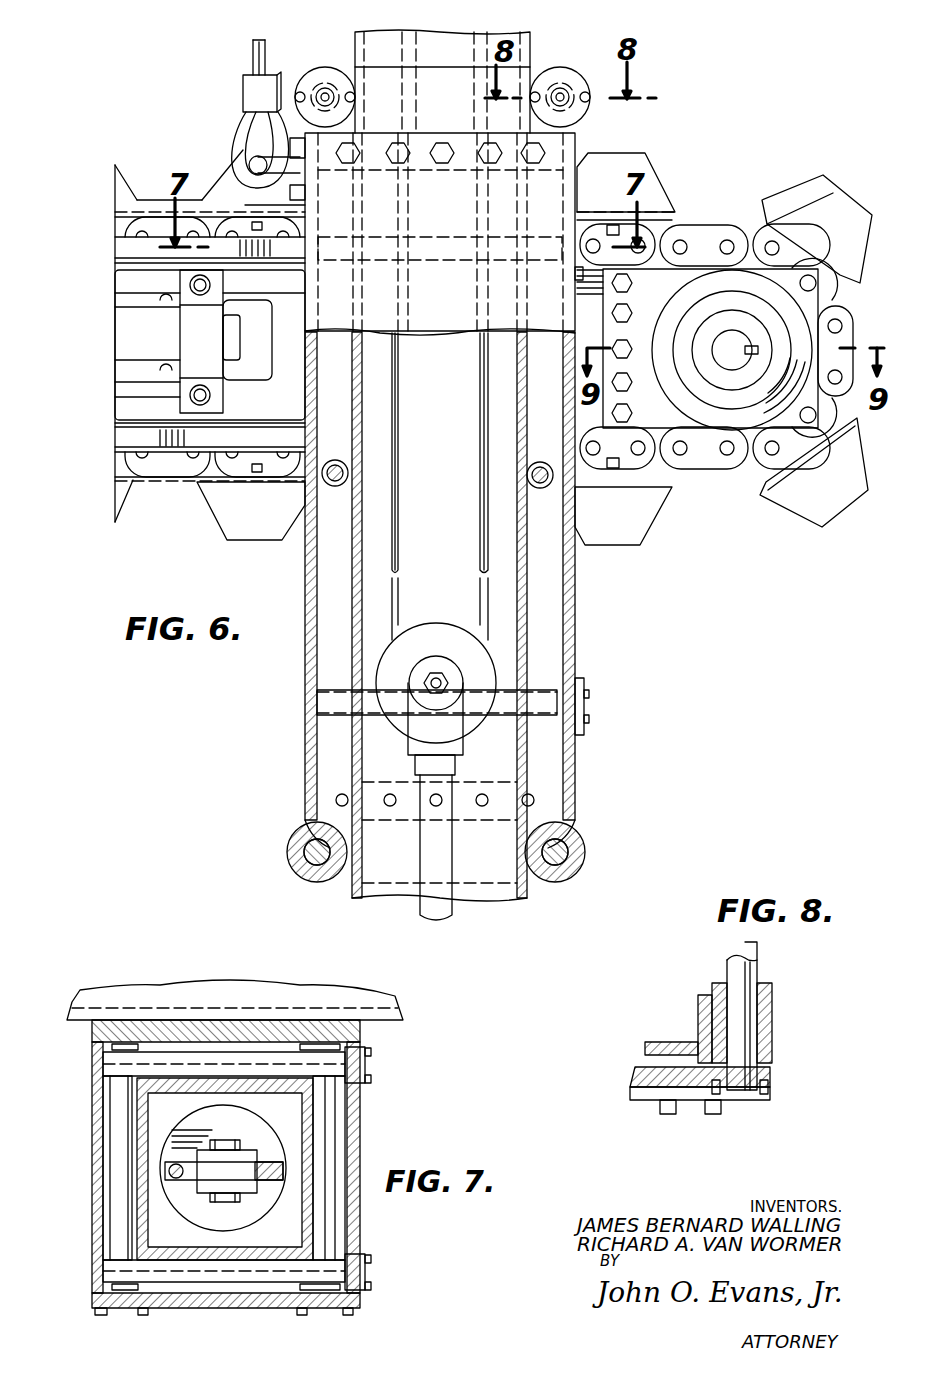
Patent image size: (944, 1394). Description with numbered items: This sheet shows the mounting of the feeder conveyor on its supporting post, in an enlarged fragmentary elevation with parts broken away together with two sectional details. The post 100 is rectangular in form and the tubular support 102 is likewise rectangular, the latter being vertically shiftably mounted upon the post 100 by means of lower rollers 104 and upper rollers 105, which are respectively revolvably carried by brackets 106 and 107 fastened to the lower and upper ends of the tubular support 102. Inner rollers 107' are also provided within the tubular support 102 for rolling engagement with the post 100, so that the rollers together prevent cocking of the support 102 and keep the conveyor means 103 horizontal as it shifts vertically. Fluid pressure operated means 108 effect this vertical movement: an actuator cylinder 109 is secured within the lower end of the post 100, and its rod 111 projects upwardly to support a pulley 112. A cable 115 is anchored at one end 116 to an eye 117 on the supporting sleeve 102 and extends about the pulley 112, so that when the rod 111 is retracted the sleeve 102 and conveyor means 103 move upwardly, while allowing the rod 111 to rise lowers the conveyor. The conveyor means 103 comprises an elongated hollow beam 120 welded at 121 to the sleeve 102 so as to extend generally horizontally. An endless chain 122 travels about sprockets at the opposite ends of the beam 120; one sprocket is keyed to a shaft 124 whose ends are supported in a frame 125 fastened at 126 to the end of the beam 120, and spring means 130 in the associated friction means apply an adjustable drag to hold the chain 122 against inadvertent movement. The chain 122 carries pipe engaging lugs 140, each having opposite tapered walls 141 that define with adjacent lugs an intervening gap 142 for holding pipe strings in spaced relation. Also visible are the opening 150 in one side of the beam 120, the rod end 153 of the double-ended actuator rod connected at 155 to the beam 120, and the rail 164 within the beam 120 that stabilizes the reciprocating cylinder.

In FIG. 6, the post 100 is at (516, 890).
In FIG. 7, the post 100 is at (310, 1222).
In FIG. 8, the post 100 is at (706, 1008).
In FIG. 6, the tubular support 102 is at (578, 573).
In FIG. 7, the tubular support 102 is at (96, 1190).
In FIG. 8, the tubular support 102 is at (755, 962).
In FIG. 6, the conveyor means 103 is at (760, 158).
In FIG. 7, the conveyor means 103 is at (107, 982).
In FIG. 6, the lower rollers 104 is at (290, 848).
In FIG. 6, the upper rollers 105 is at (318, 72).
In FIG. 8, the upper rollers 105 is at (766, 1023).
In FIG. 6, the bracket 106 is at (342, 877).
In FIG. 6, the bracket 107 is at (337, 250).
In FIG. 8, the bracket 107 is at (677, 1070).
In FIG. 6, the inner rollers 107' is at (474, 598).
In FIG. 7, the inner rollers 107' is at (235, 1167).
In FIG. 7, the fluid pressure operated means 108 is at (162, 1137).
In FIG. 7, the actuator cylinder 109 is at (182, 1205).
In FIG. 6, the rod 111 is at (452, 912).
In FIG. 6, the pulley 112 is at (425, 637).
In FIG. 7, the pulley 112 is at (258, 1157).
In FIG. 6, the cable 115 is at (257, 62).
In FIG. 7, the cable 115 is at (282, 1172).
In FIG. 6, the cable end 116 is at (247, 118).
In FIG. 6, the eye 117 is at (252, 162).
In FIG. 6, the hollow beam 120 is at (395, 330).
In FIG. 7, the hollow beam 120 is at (190, 987).
In FIG. 7, the weld 121 is at (92, 1032).
In FIG. 6, the endless chain 122 is at (707, 468).
In FIG. 6, the shaft 124 is at (727, 362).
In FIG. 6, the frame 125 is at (630, 330).
In FIG. 6, the fastening 126 is at (626, 310).
In FIG. 6, the spring means 130 is at (697, 288).
In FIG. 6, the pipe engaging lugs 140 is at (263, 530).
In FIG. 6, the tapered walls 141 is at (124, 169).
In FIG. 6, the gap 142 is at (152, 503).
In FIG. 6, the opening 150 is at (135, 403).
In FIG. 6, the rod end 153 is at (130, 338).
In FIG. 6, the connection 155 is at (212, 318).
In FIG. 6, the rail 164 is at (125, 373).